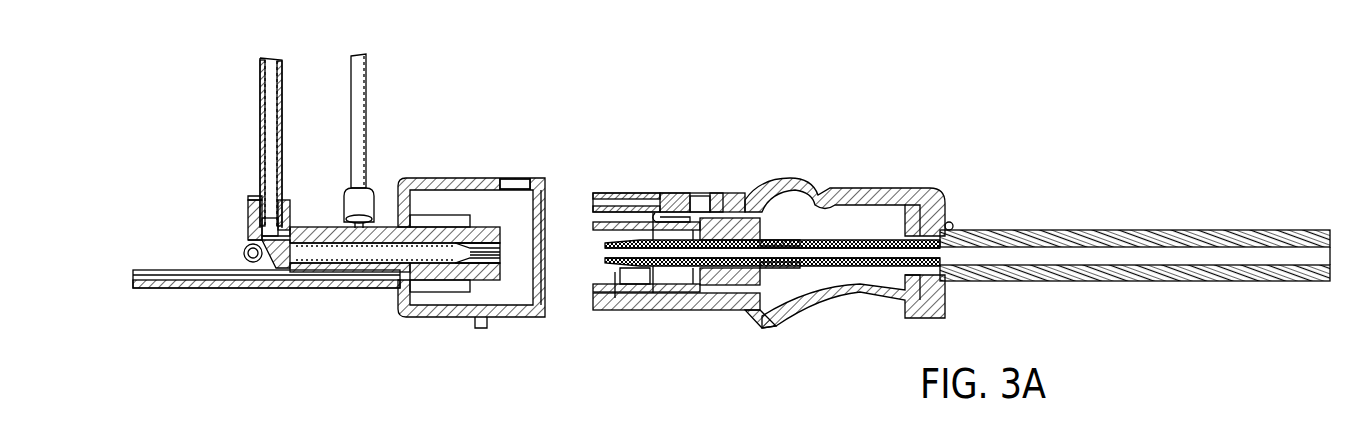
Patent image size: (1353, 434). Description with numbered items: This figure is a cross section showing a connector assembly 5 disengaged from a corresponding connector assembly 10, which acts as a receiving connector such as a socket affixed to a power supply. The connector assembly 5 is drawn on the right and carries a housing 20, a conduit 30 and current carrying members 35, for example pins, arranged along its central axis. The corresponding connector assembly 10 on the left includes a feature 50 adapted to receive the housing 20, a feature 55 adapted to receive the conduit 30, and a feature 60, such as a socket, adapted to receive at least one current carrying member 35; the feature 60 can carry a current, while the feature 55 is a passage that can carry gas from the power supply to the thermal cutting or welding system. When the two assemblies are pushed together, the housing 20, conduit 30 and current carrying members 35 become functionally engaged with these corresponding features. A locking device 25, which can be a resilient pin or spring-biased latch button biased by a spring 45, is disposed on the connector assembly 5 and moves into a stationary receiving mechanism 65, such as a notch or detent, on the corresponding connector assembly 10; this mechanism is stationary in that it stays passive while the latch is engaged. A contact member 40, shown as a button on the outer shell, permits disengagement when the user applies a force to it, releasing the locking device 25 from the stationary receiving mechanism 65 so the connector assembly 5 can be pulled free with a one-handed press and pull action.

The connector assembly 5 is at (858, 323).
The corresponding connector assembly 10 is at (414, 331).
The housing 20 is at (760, 322).
The locking device 25 is at (700, 193).
The conduit 30 is at (602, 252).
The current carrying member 35 is at (616, 276).
The contact member 40 is at (785, 182).
The spring 45 is at (641, 198).
The feature adapted to receive the housing 50 is at (455, 178).
The feature adapted to receive the conduit 55 is at (502, 253).
The feature adapted to receive the current carrying member 60 is at (470, 292).
The stationary receiving mechanism 65 is at (514, 178).